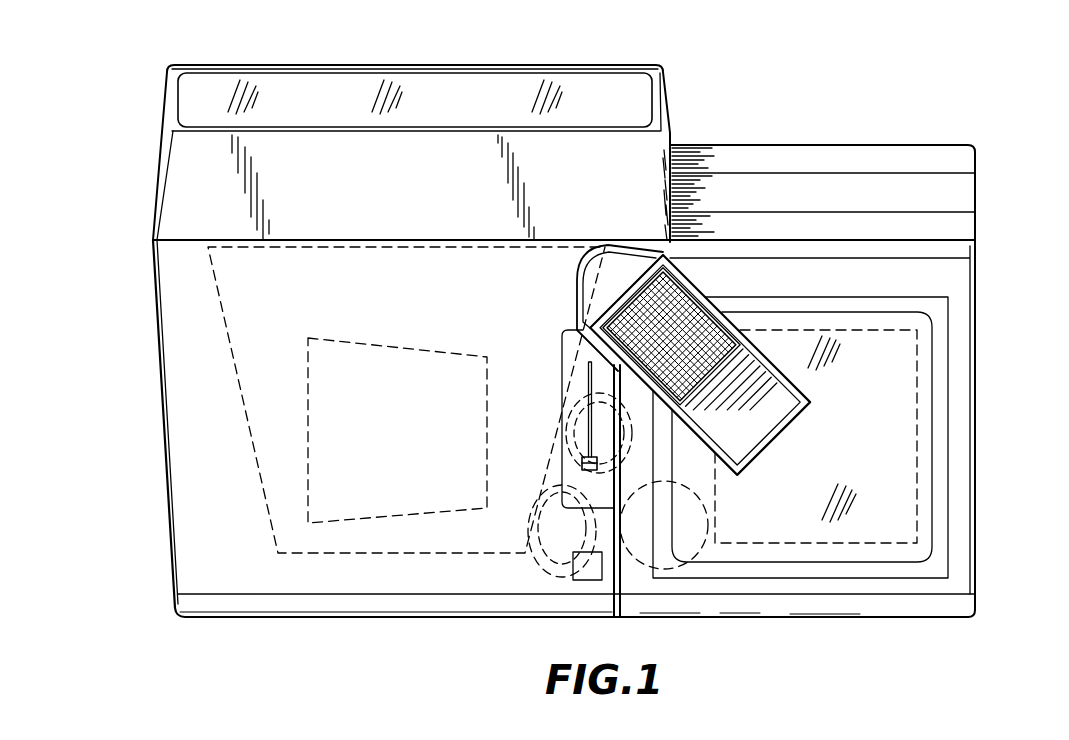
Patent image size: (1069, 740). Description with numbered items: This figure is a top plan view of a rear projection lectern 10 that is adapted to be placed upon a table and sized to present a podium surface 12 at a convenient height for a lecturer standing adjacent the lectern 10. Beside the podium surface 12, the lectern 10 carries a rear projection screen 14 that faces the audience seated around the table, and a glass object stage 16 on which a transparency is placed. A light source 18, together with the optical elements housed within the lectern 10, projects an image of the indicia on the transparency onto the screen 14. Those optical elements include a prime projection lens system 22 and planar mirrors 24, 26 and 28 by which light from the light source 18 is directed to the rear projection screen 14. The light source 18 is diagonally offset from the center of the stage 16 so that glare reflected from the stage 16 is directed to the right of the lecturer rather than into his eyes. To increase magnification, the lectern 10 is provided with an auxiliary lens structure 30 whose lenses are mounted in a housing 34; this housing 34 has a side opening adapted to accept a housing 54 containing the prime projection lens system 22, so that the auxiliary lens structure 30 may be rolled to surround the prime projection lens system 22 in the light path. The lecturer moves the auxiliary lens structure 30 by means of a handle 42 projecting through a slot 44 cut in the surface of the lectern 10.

The rear projection lectern 10 is at (979, 199).
The podium surface 12 is at (178, 410).
The rear projection screen 14 is at (367, 90).
The glass object stage 16 is at (861, 554).
The light source 18 is at (766, 424).
The prime projection lens system 22 is at (579, 397).
The planar mirror 24 is at (918, 432).
The planar mirror 26 is at (399, 350).
The planar mirror 28 is at (262, 487).
The auxiliary lens structure 30 is at (557, 574).
The housing 34 is at (645, 578).
The handle 42 is at (582, 463).
The slot 44 is at (588, 372).
The housing 54 is at (636, 441).